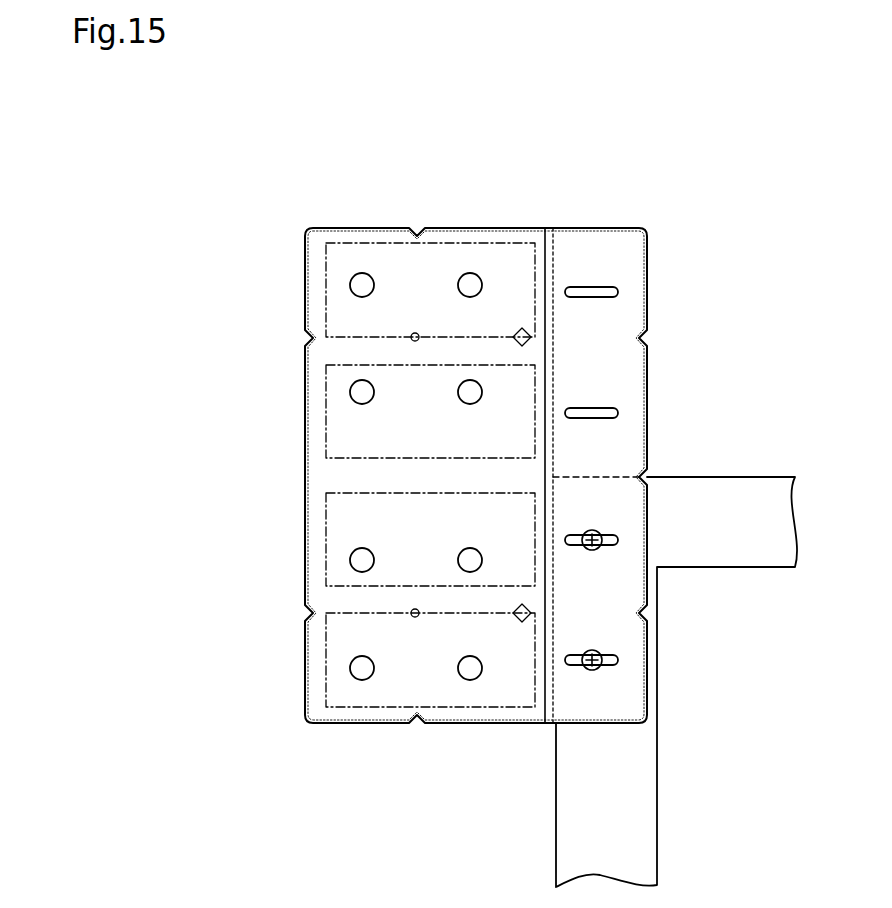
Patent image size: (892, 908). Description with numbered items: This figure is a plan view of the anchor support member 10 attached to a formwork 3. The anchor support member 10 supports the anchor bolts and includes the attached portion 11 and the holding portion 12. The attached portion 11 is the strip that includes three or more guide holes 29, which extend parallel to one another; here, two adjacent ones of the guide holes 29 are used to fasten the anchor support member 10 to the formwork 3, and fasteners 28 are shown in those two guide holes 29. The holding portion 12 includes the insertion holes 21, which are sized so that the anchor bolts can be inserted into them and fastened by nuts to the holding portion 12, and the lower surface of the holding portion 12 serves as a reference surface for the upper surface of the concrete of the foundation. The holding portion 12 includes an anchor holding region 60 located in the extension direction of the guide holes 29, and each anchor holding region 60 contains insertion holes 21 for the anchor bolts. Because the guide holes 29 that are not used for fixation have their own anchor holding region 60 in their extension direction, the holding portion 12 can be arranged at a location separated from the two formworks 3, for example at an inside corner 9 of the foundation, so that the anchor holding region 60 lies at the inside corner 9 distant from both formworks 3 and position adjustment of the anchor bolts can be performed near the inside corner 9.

The anchor support member 10 is at (638, 177).
The attached portion 11 is at (585, 238).
The holding portion 12 is at (480, 253).
The insertion holes 21 is at (372, 283).
The anchor holding region 60 is at (326, 375).
The guide holes 29 is at (612, 292).
The screw 28 is at (597, 551).
The inside corner 9 is at (612, 477).
The formworks 3 is at (762, 477).